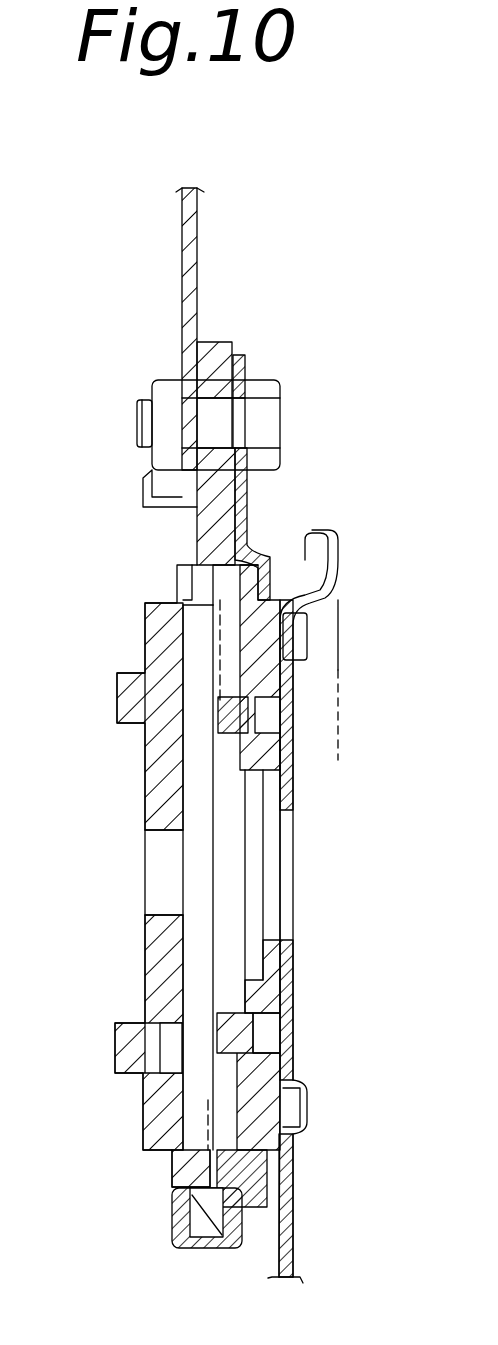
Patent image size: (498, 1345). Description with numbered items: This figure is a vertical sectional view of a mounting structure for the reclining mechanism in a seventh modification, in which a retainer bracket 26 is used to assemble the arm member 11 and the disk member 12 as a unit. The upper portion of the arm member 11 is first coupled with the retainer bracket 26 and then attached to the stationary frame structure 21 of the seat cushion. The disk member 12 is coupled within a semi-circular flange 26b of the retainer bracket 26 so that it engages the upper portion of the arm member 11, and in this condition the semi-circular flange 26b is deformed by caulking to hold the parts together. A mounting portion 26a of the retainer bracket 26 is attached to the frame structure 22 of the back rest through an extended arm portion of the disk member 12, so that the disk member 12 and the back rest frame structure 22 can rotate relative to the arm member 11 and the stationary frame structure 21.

The frame structure of the back rest 22 is at (181, 275).
The retainer bracket 26 is at (252, 366).
The mounting portion 26a is at (247, 526).
The disk member 12 is at (145, 650).
The arm member 11 is at (290, 777).
The stationary frame structure 21 is at (296, 1048).
The semi-circular flange 26b is at (185, 1250).